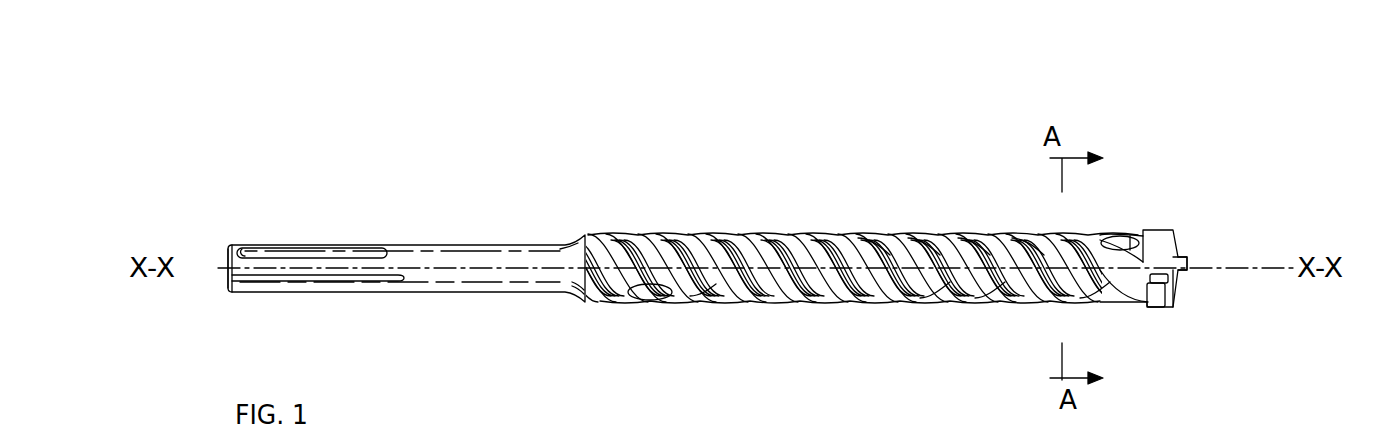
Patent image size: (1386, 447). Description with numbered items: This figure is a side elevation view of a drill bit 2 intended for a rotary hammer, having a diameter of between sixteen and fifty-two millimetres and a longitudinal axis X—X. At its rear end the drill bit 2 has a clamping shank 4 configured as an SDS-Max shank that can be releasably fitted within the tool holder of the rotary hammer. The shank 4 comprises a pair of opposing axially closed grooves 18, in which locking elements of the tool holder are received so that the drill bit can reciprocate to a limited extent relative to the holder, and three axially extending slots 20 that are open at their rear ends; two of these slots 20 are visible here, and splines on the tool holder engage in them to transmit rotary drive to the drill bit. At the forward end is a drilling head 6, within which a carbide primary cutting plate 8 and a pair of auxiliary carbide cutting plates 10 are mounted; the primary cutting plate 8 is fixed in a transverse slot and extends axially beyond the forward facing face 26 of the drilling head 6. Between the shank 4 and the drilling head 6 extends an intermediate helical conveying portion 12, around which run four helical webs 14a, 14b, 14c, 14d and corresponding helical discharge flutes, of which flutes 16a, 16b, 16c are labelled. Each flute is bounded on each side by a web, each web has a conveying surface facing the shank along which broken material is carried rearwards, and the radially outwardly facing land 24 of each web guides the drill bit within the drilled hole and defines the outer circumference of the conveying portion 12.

The drill bit 2 is at (317, 140).
The clamping shank 4 is at (1217, 212).
The drilling head 6 is at (1170, 222).
The carbide primary cutting plate 8 is at (1167, 307).
The auxiliary carbide cutting plates 10 is at (1183, 283).
The helical conveying portion 12 is at (1080, 127).
The helical web 14a is at (1102, 300).
The helical web 14b is at (945, 297).
The helical web 14c is at (997, 297).
The helical web 14d is at (1030, 237).
The helical flute 16a is at (868, 237).
The helical flute 16b is at (922, 237).
The helical flute 16c is at (977, 237).
The axially closed groove 18 is at (335, 255).
The axially extending slot 20 is at (242, 277).
The land 24 is at (733, 288).
The forward facing face 26 is at (1190, 260).